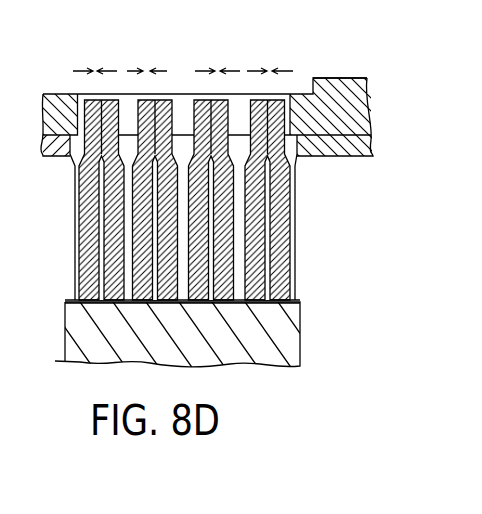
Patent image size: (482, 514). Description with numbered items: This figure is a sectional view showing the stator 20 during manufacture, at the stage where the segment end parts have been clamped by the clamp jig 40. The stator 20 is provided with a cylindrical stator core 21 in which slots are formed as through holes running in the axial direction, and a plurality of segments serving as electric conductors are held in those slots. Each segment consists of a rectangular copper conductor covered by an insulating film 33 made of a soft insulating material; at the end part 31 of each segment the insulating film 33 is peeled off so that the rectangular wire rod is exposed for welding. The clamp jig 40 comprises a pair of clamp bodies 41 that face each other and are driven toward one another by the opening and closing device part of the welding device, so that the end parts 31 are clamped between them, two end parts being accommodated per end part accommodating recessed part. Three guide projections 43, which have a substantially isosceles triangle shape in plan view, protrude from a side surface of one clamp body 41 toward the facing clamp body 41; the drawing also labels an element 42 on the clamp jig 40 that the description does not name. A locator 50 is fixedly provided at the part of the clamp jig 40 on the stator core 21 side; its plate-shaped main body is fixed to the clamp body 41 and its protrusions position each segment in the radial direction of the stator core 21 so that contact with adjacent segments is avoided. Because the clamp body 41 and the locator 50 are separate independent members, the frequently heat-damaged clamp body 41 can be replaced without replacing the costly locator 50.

The stator 20 is at (317, 325).
The stator core 21 is at (300, 301).
The end part 31 is at (178, 100).
The insulating film 33 is at (217, 303).
The clamp jig 40 is at (339, 66).
The clamp body 41 is at (327, 77).
The protrusion 42 is at (185, 177).
The guide projection 43 is at (185, 118).
The locator 50 is at (382, 146).